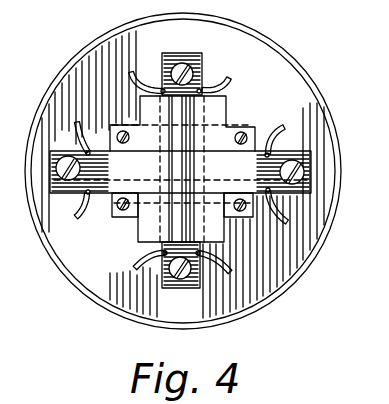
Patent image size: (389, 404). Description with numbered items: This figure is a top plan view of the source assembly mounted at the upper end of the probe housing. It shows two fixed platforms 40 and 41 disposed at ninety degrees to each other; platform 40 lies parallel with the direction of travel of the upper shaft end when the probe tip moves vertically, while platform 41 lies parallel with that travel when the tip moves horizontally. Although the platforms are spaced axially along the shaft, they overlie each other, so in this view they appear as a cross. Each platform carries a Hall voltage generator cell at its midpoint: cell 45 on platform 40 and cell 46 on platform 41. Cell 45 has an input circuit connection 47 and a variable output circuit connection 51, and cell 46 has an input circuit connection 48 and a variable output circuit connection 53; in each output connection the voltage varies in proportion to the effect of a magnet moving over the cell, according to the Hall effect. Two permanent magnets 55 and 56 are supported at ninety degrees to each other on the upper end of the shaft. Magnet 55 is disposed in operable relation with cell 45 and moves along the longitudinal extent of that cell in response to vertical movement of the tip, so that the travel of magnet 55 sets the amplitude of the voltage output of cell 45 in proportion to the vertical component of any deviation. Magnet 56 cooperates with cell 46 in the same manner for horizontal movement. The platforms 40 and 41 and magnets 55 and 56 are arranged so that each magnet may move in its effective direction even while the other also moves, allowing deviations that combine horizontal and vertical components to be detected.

The platform 40 is at (284, 155).
The platform 41 is at (203, 284).
The Hall voltage generator cell 45 is at (232, 143).
The Hall voltage generator cell 46 is at (165, 193).
The input circuit connection 47 is at (264, 152).
The input circuit connection 48 is at (150, 82).
The variable output circuit connection 51 is at (106, 150).
The variable output circuit connection 53 is at (142, 250).
The permanent magnet 55 is at (205, 165).
The permanent magnet 56 is at (124, 172).